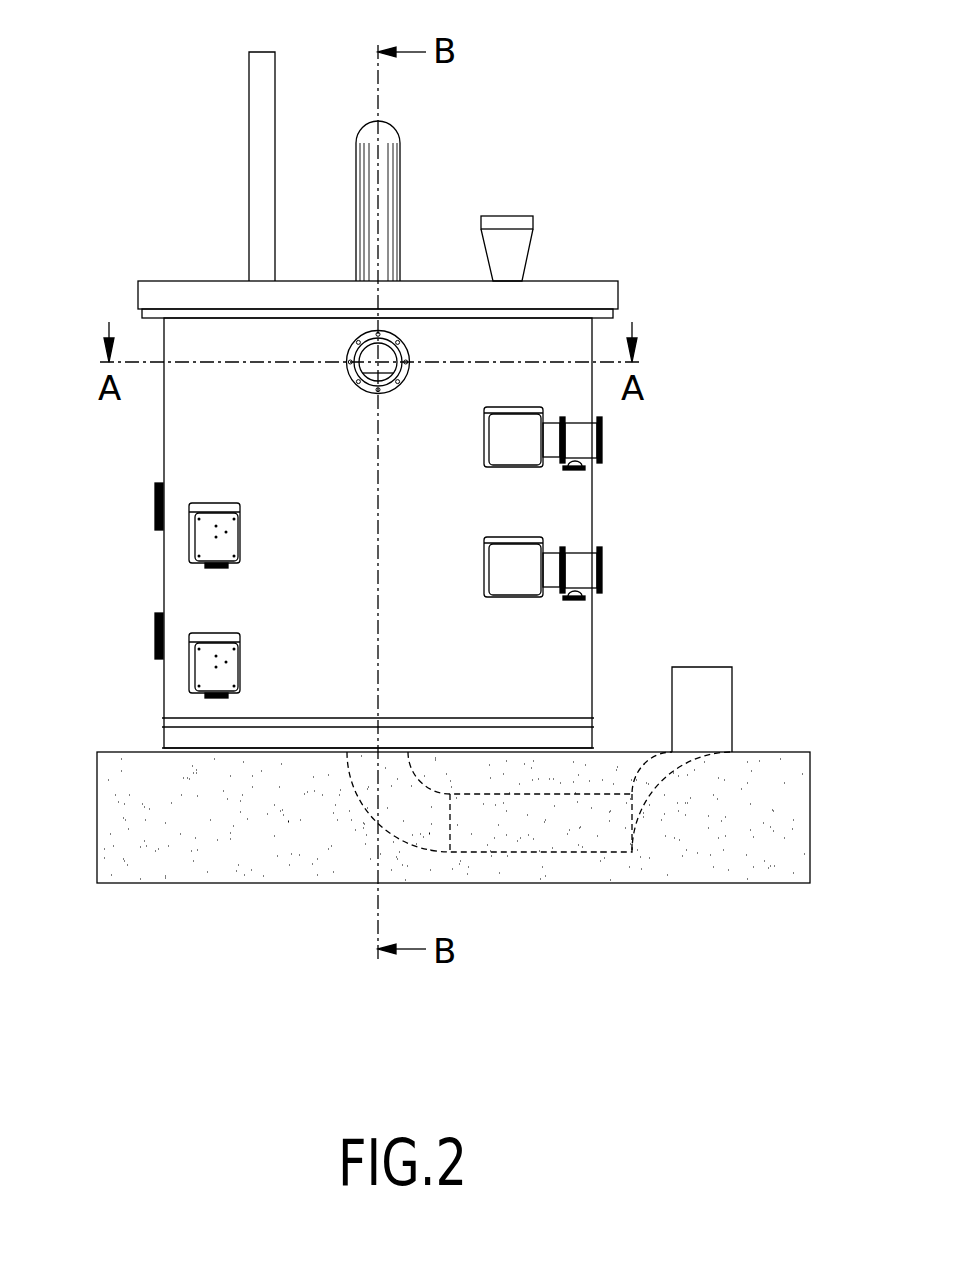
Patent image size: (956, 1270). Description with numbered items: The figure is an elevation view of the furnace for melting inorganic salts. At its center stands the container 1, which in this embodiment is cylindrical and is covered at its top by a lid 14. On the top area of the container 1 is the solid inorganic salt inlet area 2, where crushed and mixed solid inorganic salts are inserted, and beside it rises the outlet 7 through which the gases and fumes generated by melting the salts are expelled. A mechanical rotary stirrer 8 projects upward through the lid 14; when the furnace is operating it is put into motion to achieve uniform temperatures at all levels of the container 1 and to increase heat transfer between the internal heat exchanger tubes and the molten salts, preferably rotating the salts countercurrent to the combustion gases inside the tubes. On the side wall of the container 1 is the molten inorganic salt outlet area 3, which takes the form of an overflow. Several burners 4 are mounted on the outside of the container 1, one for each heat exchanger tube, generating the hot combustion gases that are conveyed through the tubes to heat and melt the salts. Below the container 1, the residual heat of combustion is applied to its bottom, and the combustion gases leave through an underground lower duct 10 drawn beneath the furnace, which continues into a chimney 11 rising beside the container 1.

The container 1 is at (184, 441).
The solid inorganic salt inlet area 2 is at (508, 217).
The molten inorganic salt outlet area 3 is at (358, 387).
The burners 4 is at (153, 506).
The outlet 7 is at (262, 133).
The mechanical rotary stirrer 8 is at (388, 167).
The underground lower duct 10 is at (532, 832).
The chimney 11 is at (705, 713).
The lid 14 is at (571, 293).